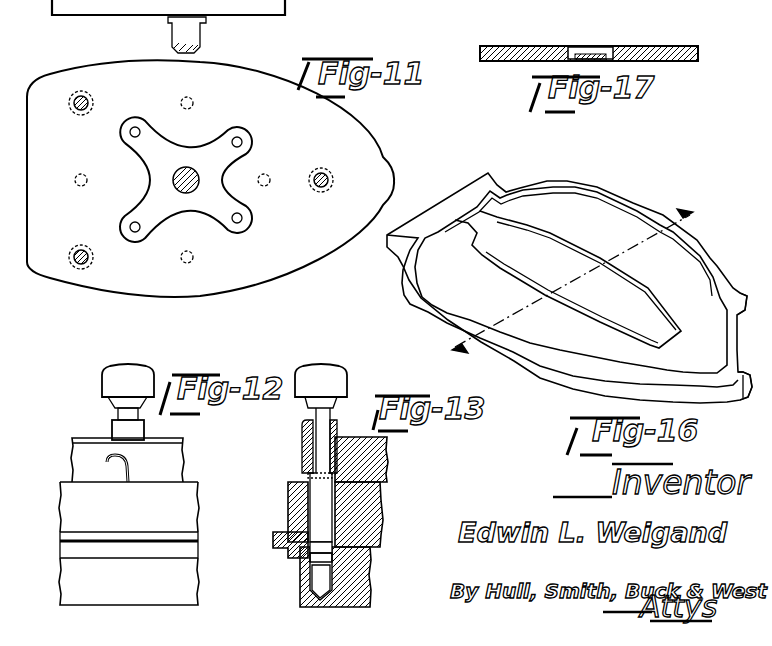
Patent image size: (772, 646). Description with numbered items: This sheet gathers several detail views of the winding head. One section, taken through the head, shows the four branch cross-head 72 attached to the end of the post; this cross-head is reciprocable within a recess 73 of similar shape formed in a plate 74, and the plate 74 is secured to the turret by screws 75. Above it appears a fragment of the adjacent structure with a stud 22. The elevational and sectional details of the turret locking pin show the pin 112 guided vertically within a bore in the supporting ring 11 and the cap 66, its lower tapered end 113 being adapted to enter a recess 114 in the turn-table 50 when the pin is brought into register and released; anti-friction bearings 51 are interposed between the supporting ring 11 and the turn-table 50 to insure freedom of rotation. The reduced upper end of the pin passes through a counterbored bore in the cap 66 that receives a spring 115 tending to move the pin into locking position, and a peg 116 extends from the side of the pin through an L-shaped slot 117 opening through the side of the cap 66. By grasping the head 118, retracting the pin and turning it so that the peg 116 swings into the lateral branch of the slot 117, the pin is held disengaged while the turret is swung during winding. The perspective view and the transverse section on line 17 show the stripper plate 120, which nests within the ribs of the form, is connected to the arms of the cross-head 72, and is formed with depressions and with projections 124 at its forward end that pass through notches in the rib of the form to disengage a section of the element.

In FIG. 11, the pin 22 is at (190, 33).
In FIG. 11, the four branch cross-head 72 is at (156, 157).
In FIG. 11, the recess 73 is at (158, 135).
In FIG. 11, the plate 74 is at (210, 178).
In FIG. 11, the screws 75 is at (90, 100).
In FIG. 17, the stripper plate 120 is at (523, 47).
In FIG. 16, the stripper plate 120 is at (593, 215).
In FIG. 16, the projections 124 is at (737, 293).
In FIG. 16, the section line 17 is at (553, 271).
In FIG. 12, the head 118 is at (110, 382).
In FIG. 13, the head 118 is at (333, 378).
In FIG. 12, the cap 66 is at (78, 455).
In FIG. 13, the cap 66 is at (388, 455).
In FIG. 12, the L-shaped slot 117 is at (108, 464).
In FIG. 12, the supporting ring 11 is at (73, 510).
In FIG. 13, the supporting ring 11 is at (372, 505).
In FIG. 12, the turn-table 50 is at (66, 582).
In FIG. 13, the turn-table 50 is at (363, 570).
In FIG. 13, the spring 115 is at (305, 460).
In FIG. 13, the peg 116 is at (305, 478).
In FIG. 13, the pin 112 is at (315, 505).
In FIG. 13, the anti-friction bearings 51 is at (276, 540).
In FIG. 13, the lower tapered end 113 is at (305, 560).
In FIG. 13, the recess 114 is at (300, 578).